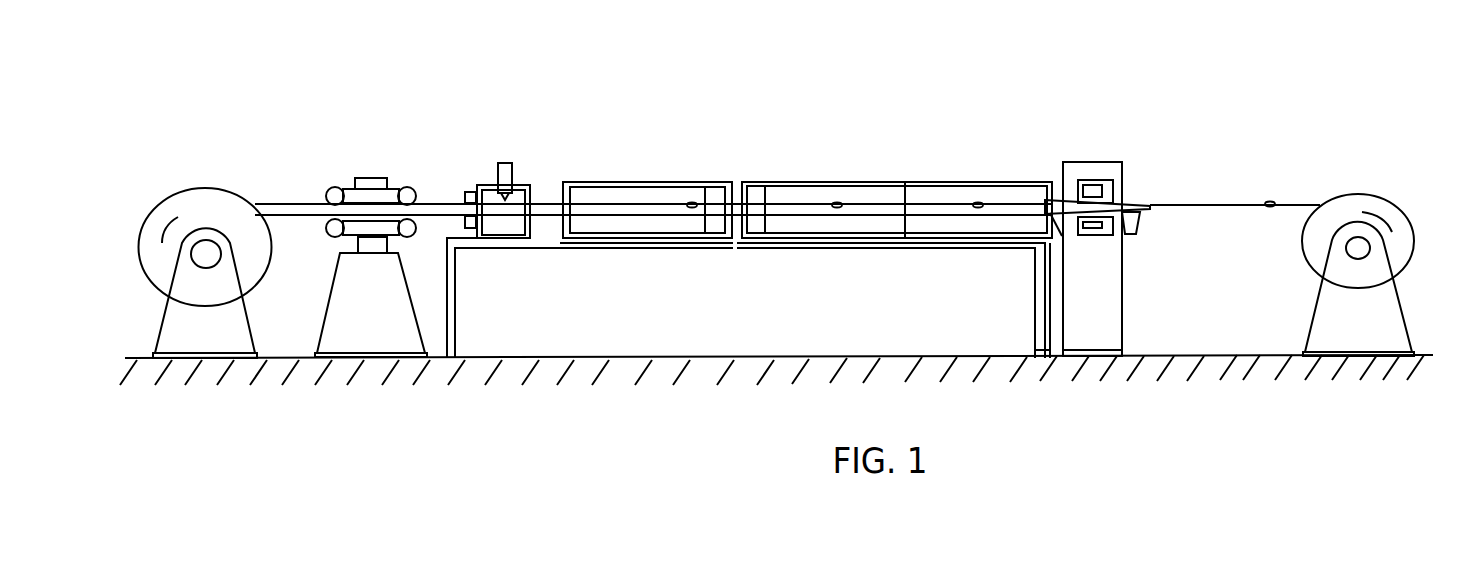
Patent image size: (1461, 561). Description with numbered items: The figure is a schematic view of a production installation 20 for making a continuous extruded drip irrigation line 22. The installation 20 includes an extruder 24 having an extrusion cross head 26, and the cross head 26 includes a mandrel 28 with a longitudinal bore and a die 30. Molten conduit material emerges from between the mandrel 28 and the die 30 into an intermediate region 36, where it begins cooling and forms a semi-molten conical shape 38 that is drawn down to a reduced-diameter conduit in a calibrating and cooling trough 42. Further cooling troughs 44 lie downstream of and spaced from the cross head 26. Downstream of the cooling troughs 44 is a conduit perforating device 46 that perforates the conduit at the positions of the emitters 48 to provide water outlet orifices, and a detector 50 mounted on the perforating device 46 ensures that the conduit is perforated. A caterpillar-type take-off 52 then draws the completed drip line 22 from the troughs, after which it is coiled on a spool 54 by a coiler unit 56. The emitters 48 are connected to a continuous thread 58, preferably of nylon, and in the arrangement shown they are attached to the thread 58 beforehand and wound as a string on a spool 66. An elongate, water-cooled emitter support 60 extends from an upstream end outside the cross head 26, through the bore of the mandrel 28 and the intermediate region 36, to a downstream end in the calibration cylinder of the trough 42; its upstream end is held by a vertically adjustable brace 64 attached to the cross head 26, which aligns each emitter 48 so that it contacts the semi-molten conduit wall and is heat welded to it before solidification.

The production installation 20 is at (1288, 110).
The drip irrigation line 22 is at (430, 202).
The extruder 24 is at (1095, 160).
The extrusion cross head 26 is at (1108, 185).
The mandrel 28 is at (1120, 193).
The die 30 is at (1087, 185).
The intermediate region 36 is at (1057, 170).
The semi-molten conical shape 38 is at (1060, 213).
The calibrating and cooling trough 42 is at (962, 178).
The cooling troughs 44 is at (657, 178).
The conduit perforating device 46 is at (504, 157).
The emitter 48 is at (692, 202).
The detector 50 is at (470, 190).
The caterpillar-type take-off 52 is at (373, 175).
The spool 54 is at (212, 208).
The coiler unit 56 is at (252, 321).
The continuous thread 58 is at (1207, 203).
The elongate emitter support 60 is at (1143, 207).
The brace 64 is at (1132, 233).
The spool 66 is at (1360, 192).